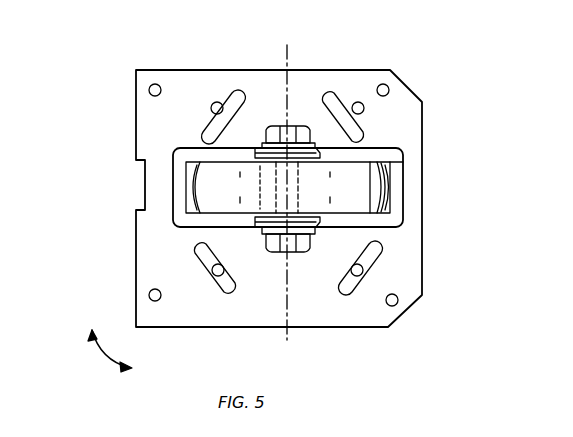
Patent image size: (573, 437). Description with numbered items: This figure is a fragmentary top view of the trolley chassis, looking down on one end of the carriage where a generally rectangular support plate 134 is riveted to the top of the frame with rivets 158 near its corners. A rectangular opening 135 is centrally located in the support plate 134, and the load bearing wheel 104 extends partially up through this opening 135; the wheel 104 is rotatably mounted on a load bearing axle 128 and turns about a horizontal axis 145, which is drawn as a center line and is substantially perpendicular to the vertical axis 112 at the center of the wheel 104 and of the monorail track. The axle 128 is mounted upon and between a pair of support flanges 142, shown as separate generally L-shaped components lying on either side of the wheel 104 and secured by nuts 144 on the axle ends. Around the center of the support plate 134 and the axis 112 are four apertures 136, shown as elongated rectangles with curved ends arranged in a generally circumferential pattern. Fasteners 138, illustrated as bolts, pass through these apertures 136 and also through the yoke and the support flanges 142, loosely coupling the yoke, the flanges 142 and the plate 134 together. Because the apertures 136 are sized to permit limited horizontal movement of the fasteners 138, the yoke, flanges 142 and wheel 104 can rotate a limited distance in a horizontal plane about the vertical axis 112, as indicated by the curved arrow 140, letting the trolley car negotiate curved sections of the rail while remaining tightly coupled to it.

The load bearing wheel 104 is at (403, 194).
The vertical axis 112 is at (284, 186).
The load bearing axle 128 is at (300, 173).
The support plate 134 is at (136, 114).
The rectangular opening 135 is at (400, 158).
The aperture 136 is at (214, 88).
The fastener 138 is at (360, 102).
The arrow 140 is at (96, 360).
The support flange 142 is at (316, 148).
The nut 144 is at (274, 125).
The horizontal axis 145 is at (287, 45).
The rivet 158 is at (161, 85).